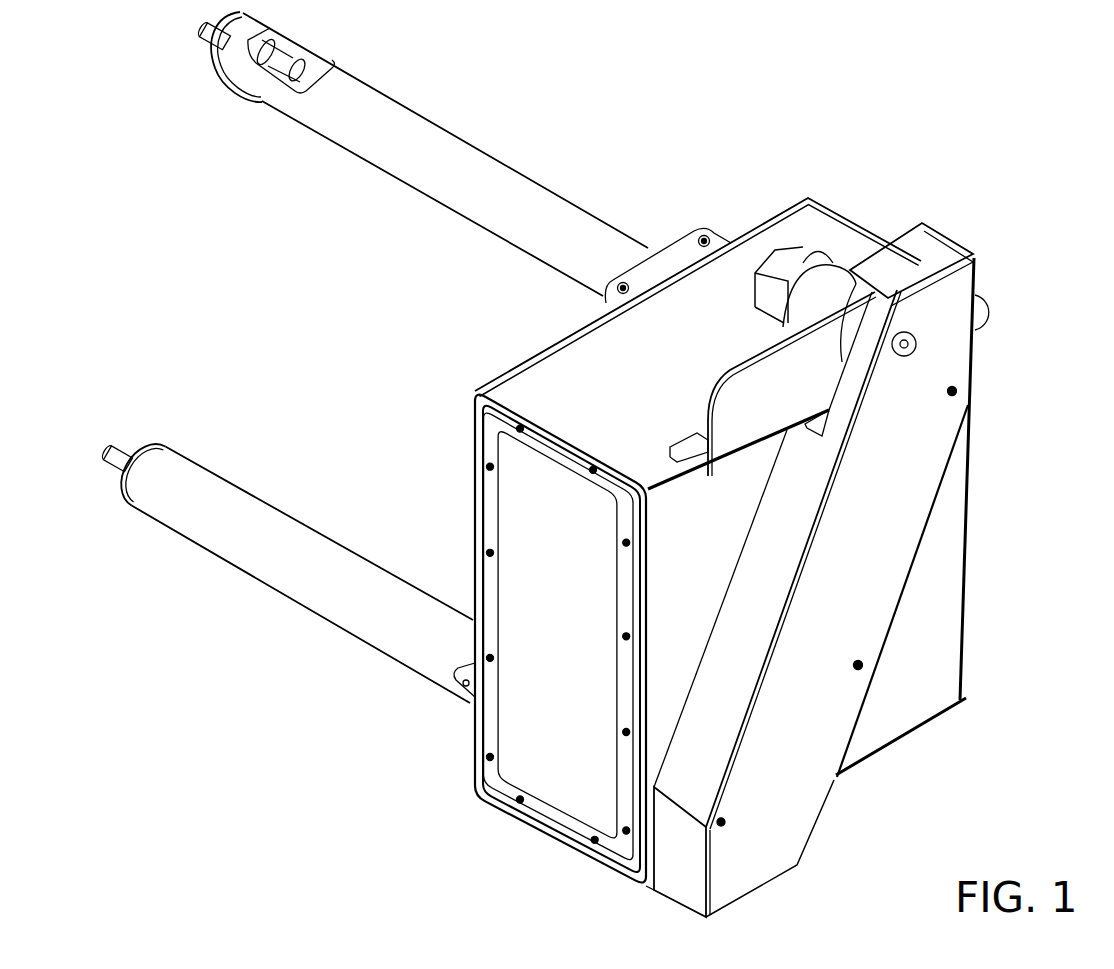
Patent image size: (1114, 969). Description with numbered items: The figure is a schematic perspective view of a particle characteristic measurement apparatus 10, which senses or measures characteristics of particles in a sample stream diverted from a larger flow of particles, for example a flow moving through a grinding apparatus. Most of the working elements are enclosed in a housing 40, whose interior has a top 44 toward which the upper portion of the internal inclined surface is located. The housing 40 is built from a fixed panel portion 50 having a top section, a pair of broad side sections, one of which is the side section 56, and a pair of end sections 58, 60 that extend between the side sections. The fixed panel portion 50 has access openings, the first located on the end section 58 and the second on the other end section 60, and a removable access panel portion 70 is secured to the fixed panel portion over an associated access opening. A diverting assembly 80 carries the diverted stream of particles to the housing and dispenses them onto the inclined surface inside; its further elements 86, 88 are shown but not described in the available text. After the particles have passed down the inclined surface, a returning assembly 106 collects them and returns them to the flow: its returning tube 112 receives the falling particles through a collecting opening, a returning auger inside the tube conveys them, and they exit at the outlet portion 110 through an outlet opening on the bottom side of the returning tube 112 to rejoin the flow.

The apparatus 10 is at (993, 92).
The housing 40 is at (970, 479).
The top 44 is at (307, 45).
The fixed panel portion 50 is at (530, 355).
The side section 56 is at (936, 611).
The end section 58 is at (490, 730).
The end section 60 is at (966, 668).
The access panel portion 70 is at (560, 787).
The diverting assembly 80 is at (604, 108).
The roller end cap 86 is at (240, 88).
The upper roller tube 88 is at (452, 110).
The returning assembly 106 is at (290, 640).
The outlet portion 110 is at (200, 574).
The returning tube 112 is at (303, 527).